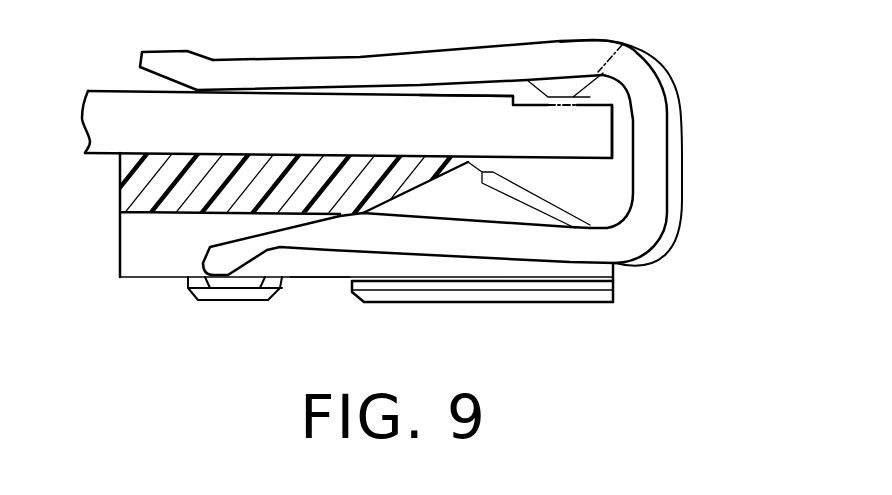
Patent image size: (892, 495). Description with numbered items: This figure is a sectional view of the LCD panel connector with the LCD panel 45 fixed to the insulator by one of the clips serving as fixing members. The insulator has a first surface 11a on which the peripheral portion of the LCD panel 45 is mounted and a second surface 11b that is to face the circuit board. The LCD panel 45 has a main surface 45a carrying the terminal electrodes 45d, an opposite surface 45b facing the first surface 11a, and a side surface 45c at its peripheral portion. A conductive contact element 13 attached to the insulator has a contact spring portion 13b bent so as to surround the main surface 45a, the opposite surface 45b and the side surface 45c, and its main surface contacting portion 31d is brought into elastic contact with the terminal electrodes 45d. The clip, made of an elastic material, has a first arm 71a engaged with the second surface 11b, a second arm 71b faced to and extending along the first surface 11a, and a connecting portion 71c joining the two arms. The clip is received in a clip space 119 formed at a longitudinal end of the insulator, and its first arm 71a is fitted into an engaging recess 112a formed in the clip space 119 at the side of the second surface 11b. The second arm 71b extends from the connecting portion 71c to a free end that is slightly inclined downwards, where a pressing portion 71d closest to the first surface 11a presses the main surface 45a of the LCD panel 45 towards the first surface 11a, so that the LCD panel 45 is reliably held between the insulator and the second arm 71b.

The first surface 11a is at (155, 153).
The second surface 11b is at (243, 302).
The conductive contact element 13 is at (683, 80).
The contact spring portion 13b is at (678, 232).
The main surface contacting portion 31d is at (562, 85).
The LCD panel 45 is at (83, 135).
The main surface 45a is at (488, 97).
The opposite surface 45b is at (560, 160).
The side surface 45c is at (613, 135).
The terminal electrodes 45d is at (622, 45).
The first arm 71a is at (523, 248).
The second arm 71b is at (410, 62).
The connecting portion 71c is at (658, 180).
The pressing portion 71d is at (232, 80).
The engaging recess 112a is at (162, 253).
The clip space 119 is at (322, 258).